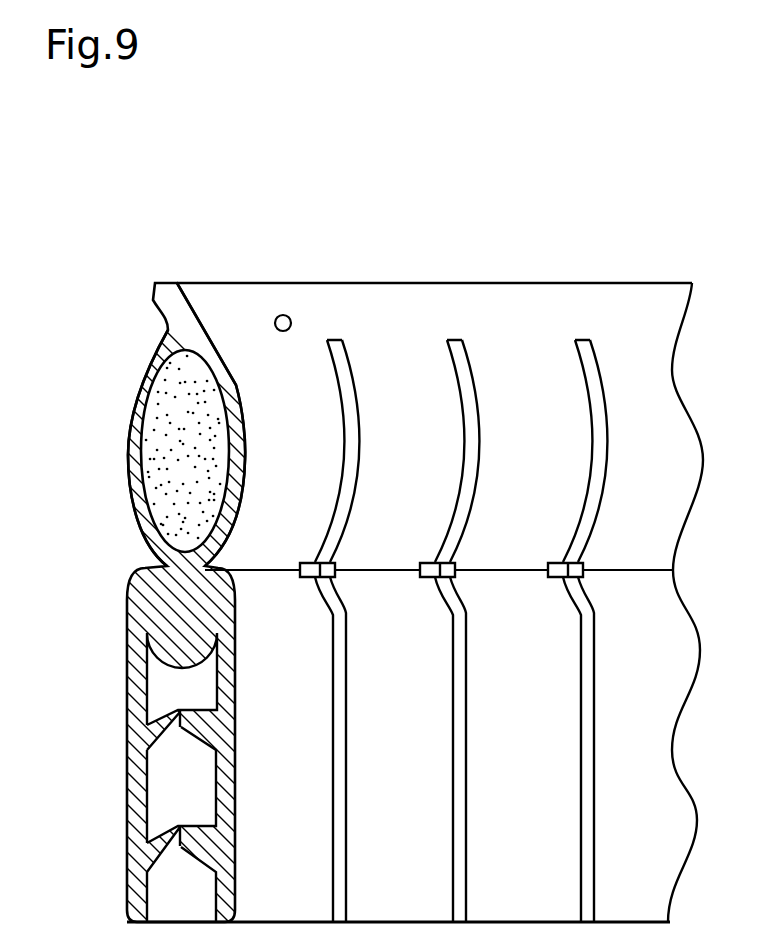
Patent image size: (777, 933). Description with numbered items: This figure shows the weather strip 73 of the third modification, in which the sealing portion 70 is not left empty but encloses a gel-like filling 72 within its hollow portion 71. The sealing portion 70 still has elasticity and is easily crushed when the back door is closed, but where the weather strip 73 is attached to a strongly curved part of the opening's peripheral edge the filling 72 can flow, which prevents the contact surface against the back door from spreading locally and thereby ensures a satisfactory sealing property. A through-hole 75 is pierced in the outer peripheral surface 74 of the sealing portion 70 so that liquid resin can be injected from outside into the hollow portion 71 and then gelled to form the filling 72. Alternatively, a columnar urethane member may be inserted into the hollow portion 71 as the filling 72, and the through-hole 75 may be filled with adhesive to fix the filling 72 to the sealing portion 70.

The sealing portion 70 is at (152, 360).
The hollow portion 71 is at (150, 423).
The gel-like filling 72 is at (172, 488).
The weather strip 73 is at (134, 278).
The outer peripheral surface 74 is at (263, 453).
The through-hole 75 is at (283, 314).